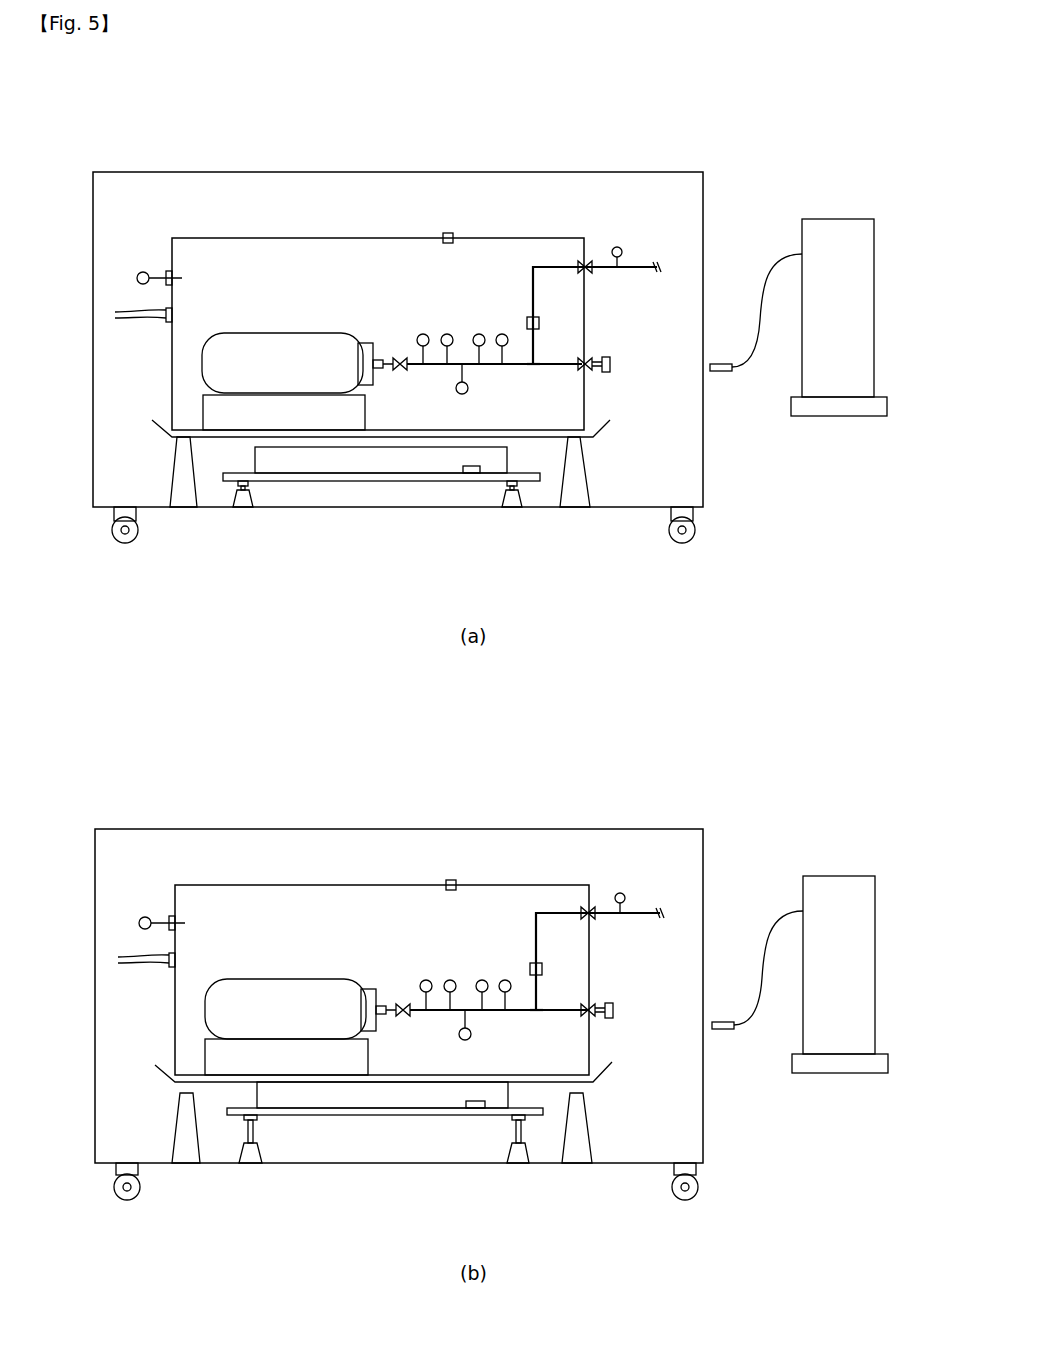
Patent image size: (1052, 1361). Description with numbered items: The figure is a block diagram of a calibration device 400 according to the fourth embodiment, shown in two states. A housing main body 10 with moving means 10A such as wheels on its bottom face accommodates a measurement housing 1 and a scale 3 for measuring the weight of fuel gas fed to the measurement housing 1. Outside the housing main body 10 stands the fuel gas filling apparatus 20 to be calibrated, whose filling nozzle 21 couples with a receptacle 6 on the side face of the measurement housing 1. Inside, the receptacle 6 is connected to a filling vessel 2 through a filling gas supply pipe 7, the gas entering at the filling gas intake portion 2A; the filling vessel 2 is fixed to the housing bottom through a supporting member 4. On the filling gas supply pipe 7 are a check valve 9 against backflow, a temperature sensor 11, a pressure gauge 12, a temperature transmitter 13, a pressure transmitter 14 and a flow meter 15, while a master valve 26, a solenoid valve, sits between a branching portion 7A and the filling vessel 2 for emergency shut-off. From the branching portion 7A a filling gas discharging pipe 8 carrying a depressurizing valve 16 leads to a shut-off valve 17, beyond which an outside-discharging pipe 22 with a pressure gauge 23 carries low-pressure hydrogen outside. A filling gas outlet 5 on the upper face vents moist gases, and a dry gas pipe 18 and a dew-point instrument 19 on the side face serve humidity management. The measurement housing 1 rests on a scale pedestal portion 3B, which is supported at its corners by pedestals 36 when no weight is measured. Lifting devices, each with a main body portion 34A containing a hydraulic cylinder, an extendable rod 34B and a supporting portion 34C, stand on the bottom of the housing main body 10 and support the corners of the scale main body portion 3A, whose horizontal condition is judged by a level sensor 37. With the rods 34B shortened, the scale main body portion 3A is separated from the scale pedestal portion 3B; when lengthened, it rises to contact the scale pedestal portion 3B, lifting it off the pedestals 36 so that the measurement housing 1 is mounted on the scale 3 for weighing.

The calibration device 400 is at (612, 153).
The housing main body 10 is at (250, 172).
The measurement housing 1 is at (207, 238).
The filling vessel 2 is at (240, 333).
The filling gas intake portion 2A is at (368, 343).
The master valve 26 is at (400, 372).
The filling gas supply pipe 7 is at (520, 367).
The branching portion 7A is at (535, 367).
The filling gas discharging pipe 8 is at (533, 262).
The outside-discharging pipe 22 is at (640, 272).
The shut-off valve 17 is at (588, 262).
The pressure gauge 23 is at (617, 247).
The depressurizing valve 16 is at (539, 323).
The filling gas outlet 5 is at (448, 233).
The pressure gauge 12 is at (423, 334).
The temperature sensor 11 is at (447, 334).
The pressure transmitter 14 is at (479, 334).
The temperature transmitter 13 is at (502, 334).
The flow meter 15 is at (462, 394).
The check valve 9 is at (588, 361).
The receptacle 6 is at (607, 374).
The dew-point instrument 19 is at (143, 272).
The dry gas pipe 18 is at (137, 320).
The supporting member 4 is at (298, 417).
The scale pedestal portion 3B is at (156, 424).
The scale main body portion 3A is at (275, 460).
The scale 3 is at (345, 490).
The level sensor 37 is at (474, 474).
The main body portion 34A is at (247, 508).
The extendable rod 34B is at (242, 490).
The supporting portion 34C is at (240, 484).
The pedestal 36 is at (174, 467).
The moving means 10A is at (669, 532).
The fuel gas filling apparatus 20 is at (820, 219).
The filling nozzle 21 is at (722, 372).